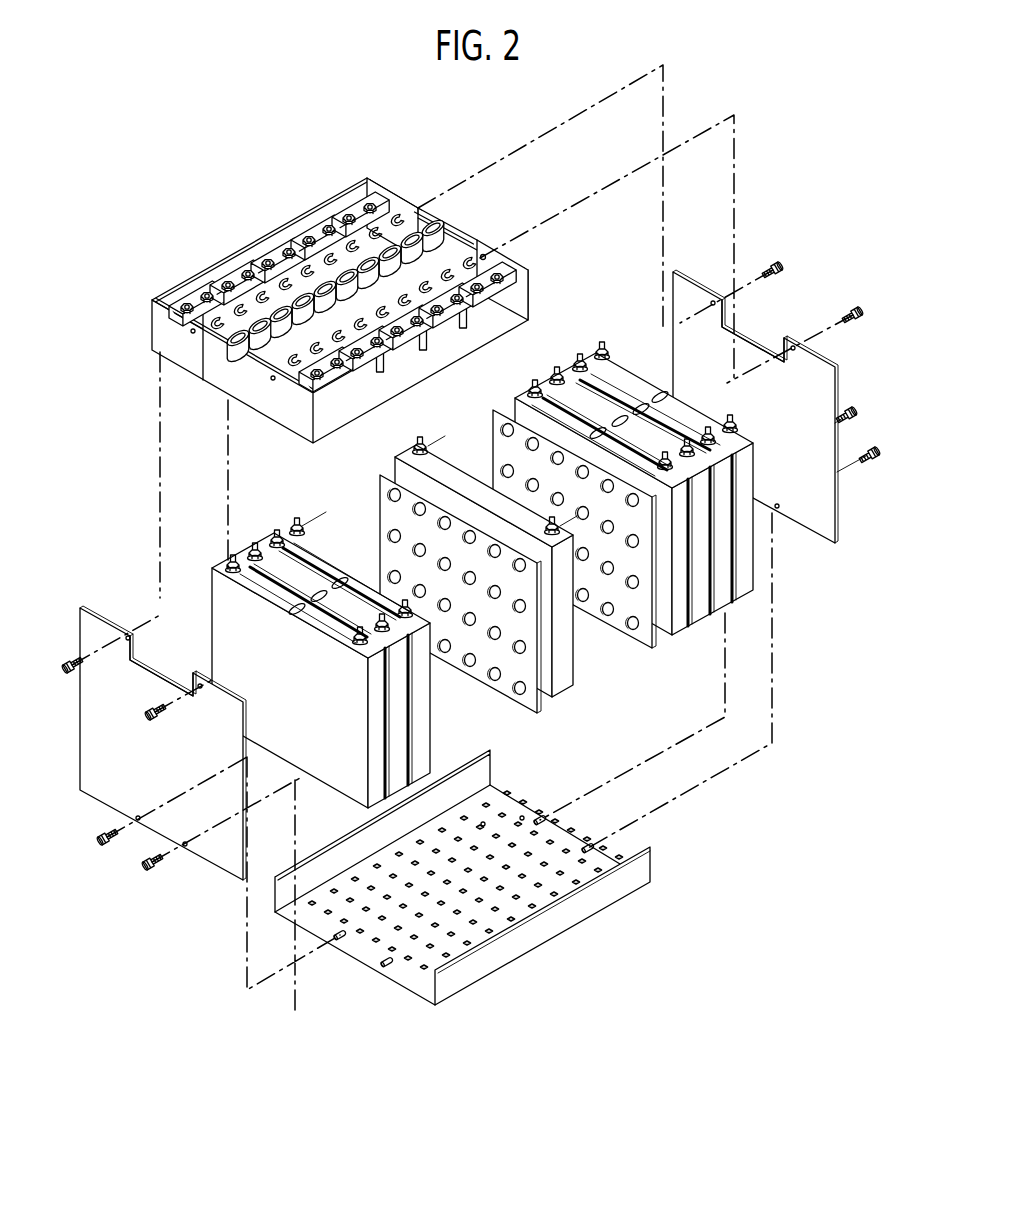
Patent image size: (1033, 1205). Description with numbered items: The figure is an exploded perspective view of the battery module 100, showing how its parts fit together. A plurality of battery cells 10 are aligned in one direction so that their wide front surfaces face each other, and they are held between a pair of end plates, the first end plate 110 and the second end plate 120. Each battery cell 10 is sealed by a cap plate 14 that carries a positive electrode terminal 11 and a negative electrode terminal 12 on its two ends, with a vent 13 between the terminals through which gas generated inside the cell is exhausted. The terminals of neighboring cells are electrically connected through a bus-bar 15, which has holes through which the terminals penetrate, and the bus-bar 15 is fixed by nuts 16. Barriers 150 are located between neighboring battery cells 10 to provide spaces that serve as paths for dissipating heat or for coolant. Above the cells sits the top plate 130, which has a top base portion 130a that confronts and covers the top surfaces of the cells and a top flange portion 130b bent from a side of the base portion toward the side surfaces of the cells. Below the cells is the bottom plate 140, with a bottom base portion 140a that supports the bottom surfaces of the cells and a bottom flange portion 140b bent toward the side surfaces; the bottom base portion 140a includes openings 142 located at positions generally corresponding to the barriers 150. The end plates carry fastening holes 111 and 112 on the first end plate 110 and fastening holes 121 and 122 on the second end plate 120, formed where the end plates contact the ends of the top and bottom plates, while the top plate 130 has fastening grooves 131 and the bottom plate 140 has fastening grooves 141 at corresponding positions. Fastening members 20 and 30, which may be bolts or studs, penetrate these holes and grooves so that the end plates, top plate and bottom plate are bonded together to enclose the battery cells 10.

The battery module 100 is at (472, 552).
The battery cells 10 is at (494, 569).
The positive electrode terminal 11 is at (597, 346).
The negative electrode terminal 12 is at (731, 418).
The vent 13 is at (662, 396).
The cap plate 14 is at (637, 382).
The bus-bar 15 is at (291, 528).
The nuts 16 is at (192, 296).
The fastening member 20 is at (152, 865).
The fastening member 30 is at (150, 712).
The first end plate 110 is at (155, 744).
The fastening hole 111 is at (185, 846).
The fastening hole 112 is at (198, 686).
The second end plate 120 is at (767, 444).
The fastening hole 121 is at (778, 508).
The fastening hole 122 is at (776, 358).
The top plate 130 is at (393, 312).
The top base portion 130a is at (524, 282).
The top flange portion 130b is at (340, 312).
The fastening groove 131 is at (482, 255).
The bottom plate 140 is at (462, 883).
The bottom base portion 140a is at (480, 934).
The bottom flange portion 140b is at (548, 935).
The fastening groove 141 is at (589, 845).
The opening 142 is at (522, 817).
The barrier 150 is at (653, 650).